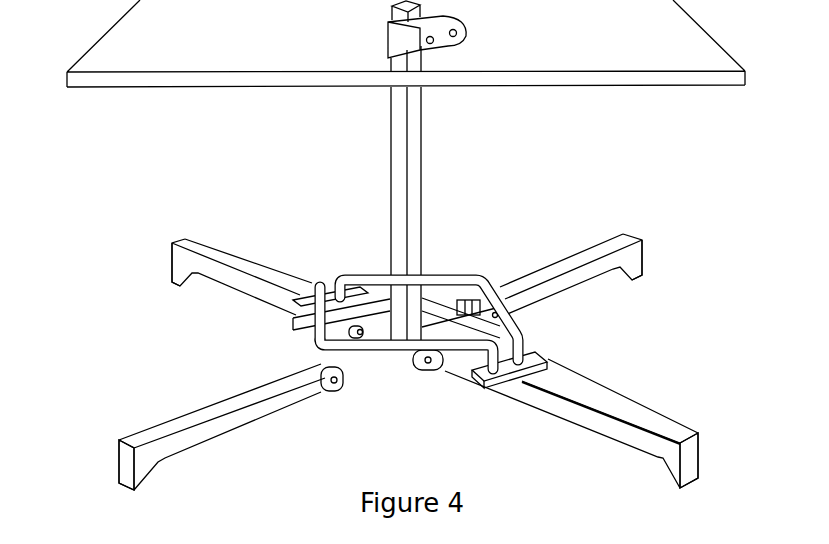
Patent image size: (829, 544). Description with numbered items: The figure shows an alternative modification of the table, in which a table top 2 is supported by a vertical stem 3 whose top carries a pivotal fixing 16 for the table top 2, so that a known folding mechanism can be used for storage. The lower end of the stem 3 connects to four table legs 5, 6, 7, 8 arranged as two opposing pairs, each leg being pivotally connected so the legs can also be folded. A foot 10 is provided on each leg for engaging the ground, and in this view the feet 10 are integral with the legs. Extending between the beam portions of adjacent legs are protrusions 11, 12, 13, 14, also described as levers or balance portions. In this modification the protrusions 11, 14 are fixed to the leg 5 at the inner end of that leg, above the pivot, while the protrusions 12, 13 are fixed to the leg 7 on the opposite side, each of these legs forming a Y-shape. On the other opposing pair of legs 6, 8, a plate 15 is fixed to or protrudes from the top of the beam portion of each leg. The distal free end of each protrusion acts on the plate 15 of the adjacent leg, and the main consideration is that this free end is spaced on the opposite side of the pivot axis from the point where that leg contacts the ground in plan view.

The table top 2 is at (647, 77).
The stem 3 is at (396, 121).
The table leg 5 is at (160, 405).
The table leg 6 is at (158, 295).
The table leg 7 is at (650, 290).
The table leg 8 is at (655, 392).
The foot 10 is at (193, 282).
The protrusion 11 is at (307, 317).
The protrusion 12 is at (437, 274).
The protrusion 13 is at (510, 313).
The protrusion 14 is at (393, 347).
The plate 15 is at (302, 300).
The pivotal fixing 16 is at (465, 57).